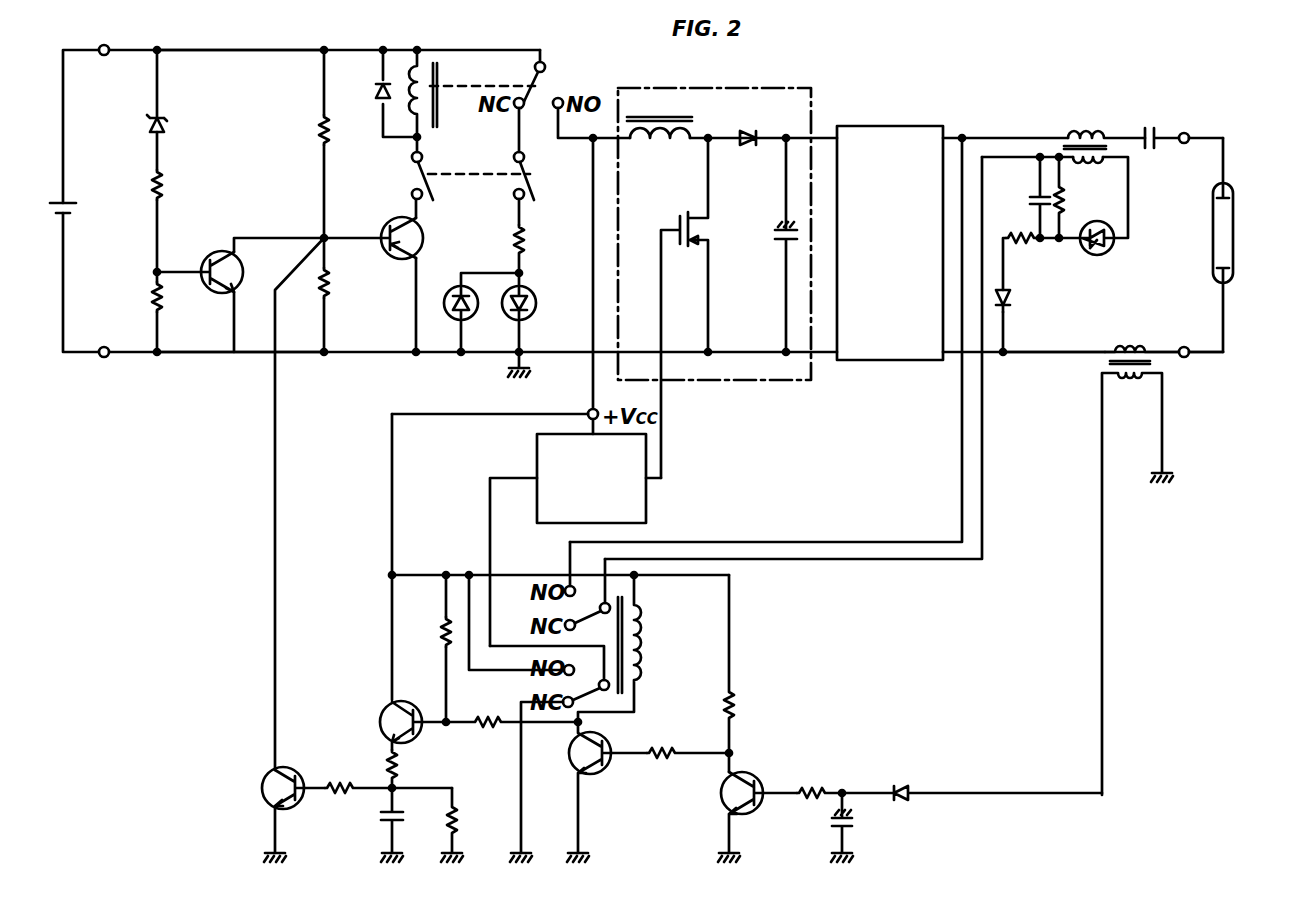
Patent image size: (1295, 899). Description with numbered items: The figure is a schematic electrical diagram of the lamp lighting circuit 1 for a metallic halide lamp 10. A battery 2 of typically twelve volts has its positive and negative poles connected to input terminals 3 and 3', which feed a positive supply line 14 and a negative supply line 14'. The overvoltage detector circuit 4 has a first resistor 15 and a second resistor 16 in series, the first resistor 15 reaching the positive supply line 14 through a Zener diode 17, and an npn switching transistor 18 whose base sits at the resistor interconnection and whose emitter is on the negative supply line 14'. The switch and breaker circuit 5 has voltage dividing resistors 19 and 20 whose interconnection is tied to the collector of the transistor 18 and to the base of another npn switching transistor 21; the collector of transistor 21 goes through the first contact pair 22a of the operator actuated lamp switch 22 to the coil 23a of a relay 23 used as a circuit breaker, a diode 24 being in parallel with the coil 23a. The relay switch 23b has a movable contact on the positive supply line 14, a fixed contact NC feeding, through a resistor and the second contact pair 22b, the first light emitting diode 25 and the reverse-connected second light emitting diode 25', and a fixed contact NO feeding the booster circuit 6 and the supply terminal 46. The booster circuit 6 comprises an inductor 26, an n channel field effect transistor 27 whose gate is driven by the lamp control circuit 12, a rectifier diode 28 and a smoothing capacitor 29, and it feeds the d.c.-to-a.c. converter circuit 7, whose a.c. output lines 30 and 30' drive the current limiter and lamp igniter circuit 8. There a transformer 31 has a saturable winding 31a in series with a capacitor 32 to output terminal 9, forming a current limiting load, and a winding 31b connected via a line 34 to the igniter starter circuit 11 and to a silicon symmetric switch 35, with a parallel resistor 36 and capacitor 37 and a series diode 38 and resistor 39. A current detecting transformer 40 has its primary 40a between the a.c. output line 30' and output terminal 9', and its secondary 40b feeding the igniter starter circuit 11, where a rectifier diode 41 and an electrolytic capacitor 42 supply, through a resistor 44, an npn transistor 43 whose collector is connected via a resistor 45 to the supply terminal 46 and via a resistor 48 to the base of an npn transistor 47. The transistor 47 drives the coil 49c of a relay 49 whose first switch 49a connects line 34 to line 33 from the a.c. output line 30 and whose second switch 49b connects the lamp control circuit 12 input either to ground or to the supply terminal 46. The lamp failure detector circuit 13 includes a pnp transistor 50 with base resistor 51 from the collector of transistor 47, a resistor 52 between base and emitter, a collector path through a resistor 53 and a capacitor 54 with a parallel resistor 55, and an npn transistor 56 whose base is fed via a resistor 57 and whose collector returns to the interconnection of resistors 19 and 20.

The lamp lighting circuit 1 is at (1220, 66).
The battery 2 is at (60, 200).
The input terminal 3 is at (123, 31).
The input terminal 3' is at (114, 382).
The overvoltage detector circuit 4 is at (236, 220).
The switch and breaker circuit 5 is at (478, 44).
The d.c. voltage booster circuit 6 is at (732, 264).
The d.c.-to-a.c. converter circuit 7 is at (910, 124).
The current limiter and lamp igniter circuit 8 is at (1102, 412).
The output terminal 9 is at (1201, 116).
The output terminal 9' is at (1201, 377).
The metallic halide lamp 10 is at (1234, 230).
The igniter starter circuit 11 is at (834, 718).
The lamp control circuit 12 is at (648, 512).
The lamp failure detector circuit 13 is at (420, 732).
The positive supply line 14 is at (240, 34).
The negative supply line 14' is at (240, 384).
The first resistor 15 is at (150, 187).
The second resistor 16 is at (150, 301).
The Zener diode 17 is at (166, 128).
The npn switching transistor 18 is at (208, 258).
The first resistor 19 is at (332, 146).
The second resistor 20 is at (332, 300).
The npn switching transistor 21 is at (390, 254).
The lamp switch 22 is at (473, 196).
The first contact pair 22a is at (428, 192).
The second contact pair 22b is at (520, 182).
The relay 23 is at (485, 95).
The relay coil 23a is at (414, 80).
The relay switch 23b is at (546, 90).
The diode 24 is at (376, 95).
The first light emitting diode 25 is at (539, 319).
The second light emitting diode 25' is at (480, 319).
The inductor 26 is at (648, 148).
The n channel field effect transistor 27 is at (686, 248).
The rectifier diode 28 is at (746, 148).
The smoothing capacitor 29 is at (780, 246).
The a.c. output line 30 is at (1005, 110).
The a.c. output line 30' is at (1054, 379).
The transformer 31 is at (1091, 96).
The transformer winding 31a is at (1078, 132).
The transformer winding 31b is at (1104, 152).
The capacitor 32 is at (1156, 150).
The line 33 is at (892, 540).
The line 34 is at (984, 522).
The silicon symmetric switch 35 is at (1106, 252).
The resistor 36 is at (1066, 202).
The capacitor 37 is at (1032, 196).
The diode 38 is at (1012, 304).
The resistor 39 is at (1024, 246).
The transformer 40 is at (1162, 528).
The primary 40a is at (1130, 348).
The secondary 40b is at (1110, 298).
The rectifier diode 41 is at (898, 788).
The electrolytic capacitor 42 is at (852, 826).
The npn transistor 43 is at (762, 782).
The resistor 44 is at (816, 790).
The resistor 45 is at (738, 702).
The supply terminal 46 is at (589, 410).
The npn transistor 47 is at (598, 776).
The resistor 48 is at (660, 770).
The relay 49 is at (652, 634).
The first relay switch 49a is at (588, 590).
The second relay switch 49b is at (604, 700).
The relay coil 49c is at (640, 678).
The pnp transistor 50 is at (420, 706).
The resistor 51 is at (490, 732).
The resistor 52 is at (444, 632).
The resistor 53 is at (398, 770).
The capacitor 54 is at (372, 818).
The resistor 55 is at (460, 822).
The npn transistor 56 is at (290, 768).
The resistor 57 is at (340, 798).